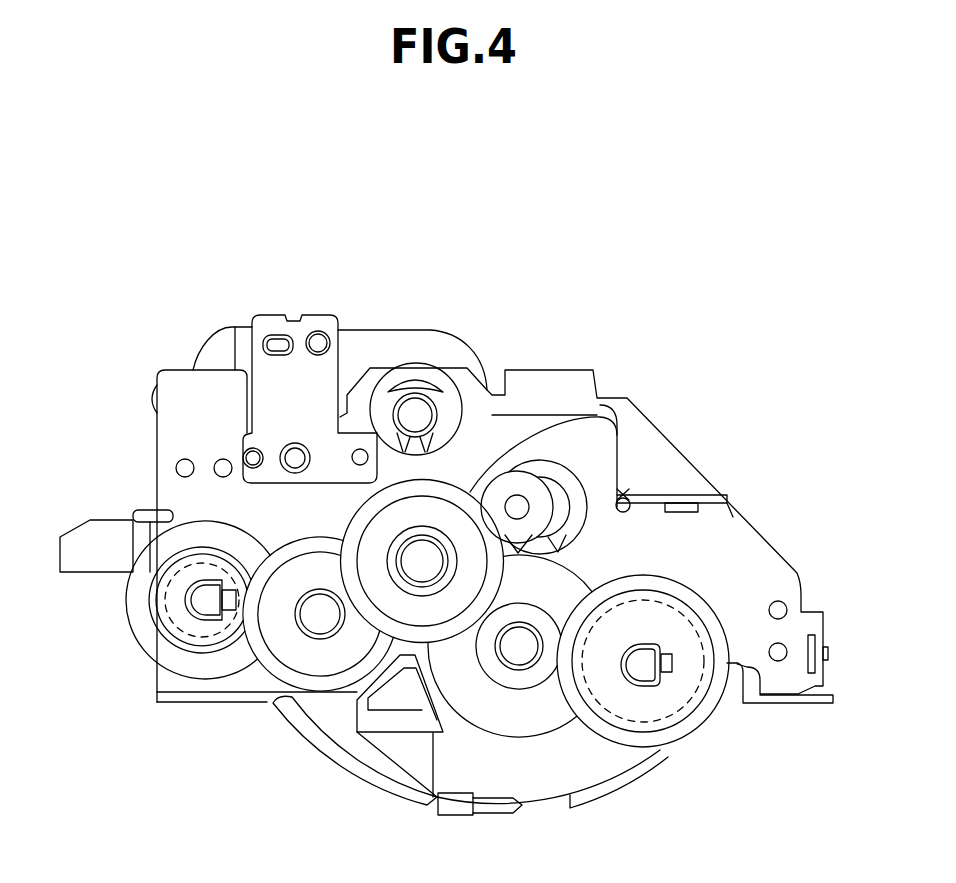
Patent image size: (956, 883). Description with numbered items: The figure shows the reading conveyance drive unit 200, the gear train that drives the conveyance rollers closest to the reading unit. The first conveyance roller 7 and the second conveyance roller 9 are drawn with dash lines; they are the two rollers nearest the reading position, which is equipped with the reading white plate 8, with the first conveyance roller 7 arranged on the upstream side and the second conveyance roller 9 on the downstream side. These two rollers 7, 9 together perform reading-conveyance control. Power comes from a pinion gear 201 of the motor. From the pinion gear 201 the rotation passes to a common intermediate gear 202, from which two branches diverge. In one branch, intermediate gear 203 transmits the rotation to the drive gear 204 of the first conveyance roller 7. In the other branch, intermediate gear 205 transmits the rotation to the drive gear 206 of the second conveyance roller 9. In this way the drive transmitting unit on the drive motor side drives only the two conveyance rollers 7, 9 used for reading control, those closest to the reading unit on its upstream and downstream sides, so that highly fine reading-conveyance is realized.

The reading conveyance drive unit 200 is at (447, 268).
The pinion gear 201 is at (532, 487).
The intermediate gear 202 is at (443, 492).
The intermediate gear 203 is at (573, 580).
The drive gear 204 is at (687, 595).
The intermediate gear 205 is at (290, 653).
The drive gear 206 is at (141, 633).
The first conveyance roller 7 is at (668, 702).
The reading white plate 8 is at (533, 800).
The second conveyance roller 9 is at (172, 603).